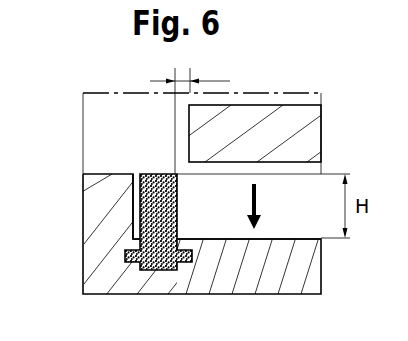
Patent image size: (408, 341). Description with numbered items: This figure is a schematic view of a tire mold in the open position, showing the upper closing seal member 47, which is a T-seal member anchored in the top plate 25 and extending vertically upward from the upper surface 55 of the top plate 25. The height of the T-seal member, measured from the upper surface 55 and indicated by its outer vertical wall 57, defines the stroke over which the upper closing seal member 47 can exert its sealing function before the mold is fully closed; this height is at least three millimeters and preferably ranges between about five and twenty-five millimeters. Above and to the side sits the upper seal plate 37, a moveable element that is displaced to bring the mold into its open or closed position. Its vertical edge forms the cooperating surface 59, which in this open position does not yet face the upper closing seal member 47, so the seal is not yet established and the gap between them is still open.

The top plate 25 is at (110, 194).
The upper seal plate 37 is at (297, 131).
The upper closing seal member 47 is at (131, 224).
The upper surface 55 is at (287, 225).
The outer vertical wall 57 is at (188, 215).
The cooperating surface 59 is at (180, 124).